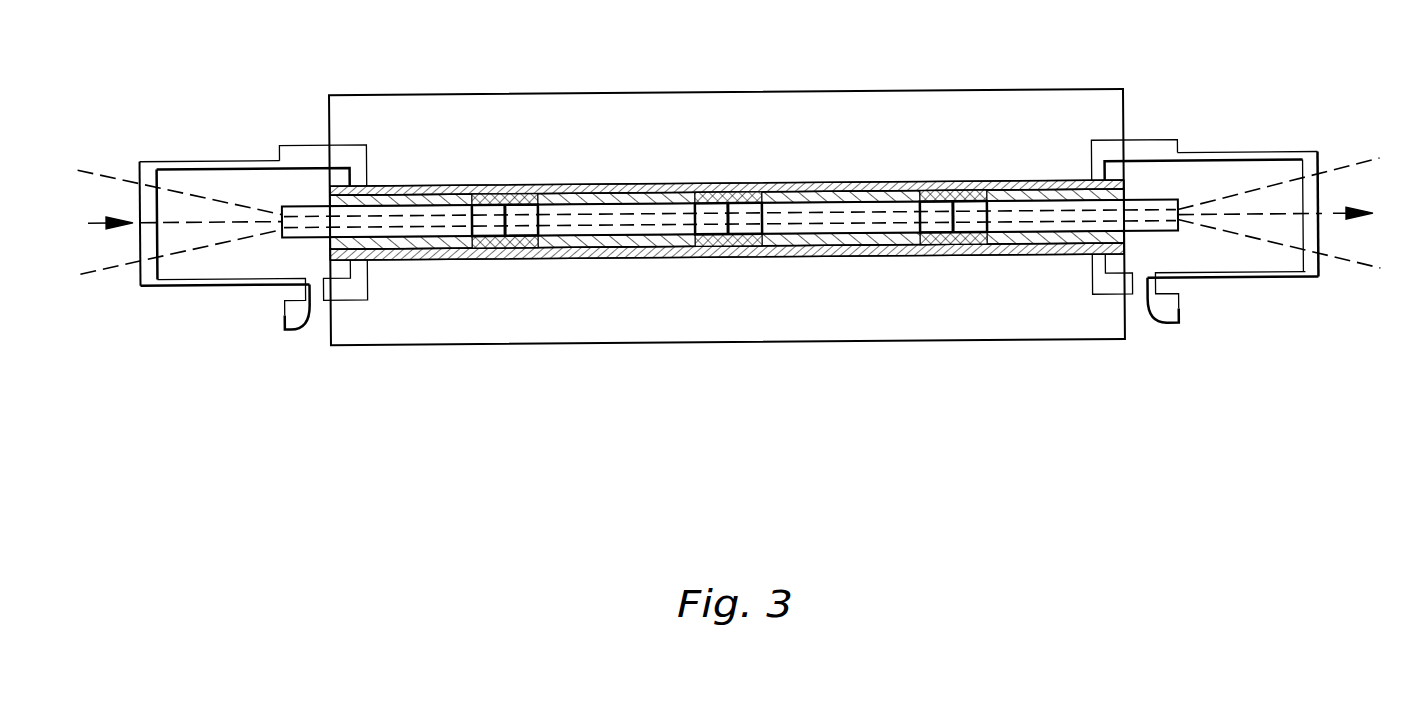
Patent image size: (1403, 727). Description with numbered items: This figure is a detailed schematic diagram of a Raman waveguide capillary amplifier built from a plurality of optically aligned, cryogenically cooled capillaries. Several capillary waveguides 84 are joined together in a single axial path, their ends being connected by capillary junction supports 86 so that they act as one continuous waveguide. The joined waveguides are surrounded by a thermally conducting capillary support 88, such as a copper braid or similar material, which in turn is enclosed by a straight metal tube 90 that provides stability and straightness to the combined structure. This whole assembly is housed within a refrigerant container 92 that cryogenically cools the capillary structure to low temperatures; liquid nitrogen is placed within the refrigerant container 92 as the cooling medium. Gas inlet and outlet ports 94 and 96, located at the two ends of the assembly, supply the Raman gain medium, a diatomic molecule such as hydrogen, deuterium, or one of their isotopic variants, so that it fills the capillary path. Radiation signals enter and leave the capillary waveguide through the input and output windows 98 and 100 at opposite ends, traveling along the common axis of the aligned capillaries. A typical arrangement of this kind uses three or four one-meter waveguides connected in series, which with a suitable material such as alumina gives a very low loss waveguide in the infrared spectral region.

The capillary waveguide 84 is at (788, 217).
The capillary junction support 86 is at (712, 257).
The thermally conducting capillary support 88 is at (388, 198).
The straight metal tube 90 is at (462, 257).
The refrigerant container 92 is at (605, 345).
The gas inlet port 94 is at (1180, 312).
The gas outlet port 96 is at (283, 318).
The input window 98 is at (150, 195).
The output window 100 is at (1305, 182).